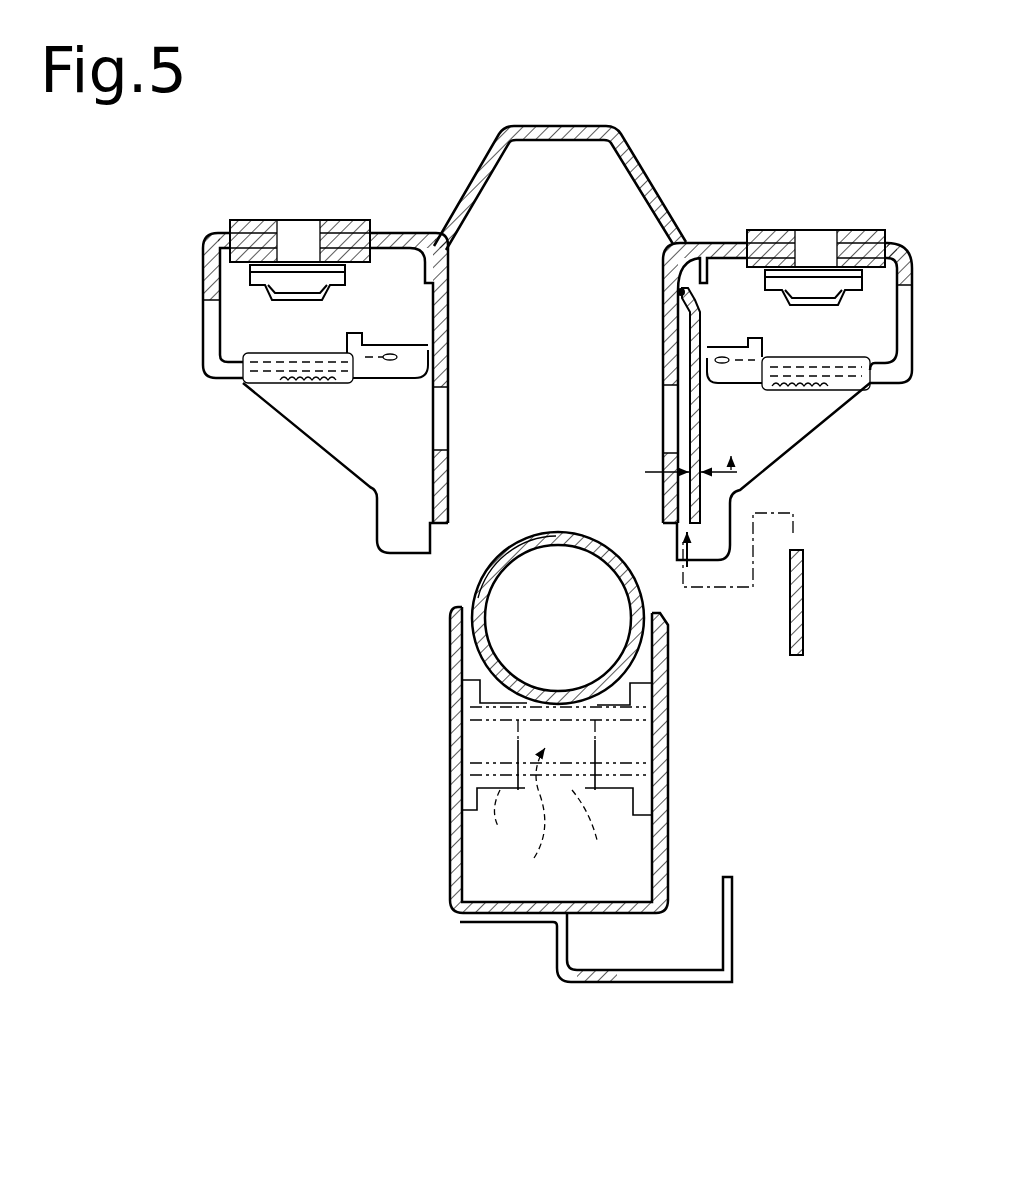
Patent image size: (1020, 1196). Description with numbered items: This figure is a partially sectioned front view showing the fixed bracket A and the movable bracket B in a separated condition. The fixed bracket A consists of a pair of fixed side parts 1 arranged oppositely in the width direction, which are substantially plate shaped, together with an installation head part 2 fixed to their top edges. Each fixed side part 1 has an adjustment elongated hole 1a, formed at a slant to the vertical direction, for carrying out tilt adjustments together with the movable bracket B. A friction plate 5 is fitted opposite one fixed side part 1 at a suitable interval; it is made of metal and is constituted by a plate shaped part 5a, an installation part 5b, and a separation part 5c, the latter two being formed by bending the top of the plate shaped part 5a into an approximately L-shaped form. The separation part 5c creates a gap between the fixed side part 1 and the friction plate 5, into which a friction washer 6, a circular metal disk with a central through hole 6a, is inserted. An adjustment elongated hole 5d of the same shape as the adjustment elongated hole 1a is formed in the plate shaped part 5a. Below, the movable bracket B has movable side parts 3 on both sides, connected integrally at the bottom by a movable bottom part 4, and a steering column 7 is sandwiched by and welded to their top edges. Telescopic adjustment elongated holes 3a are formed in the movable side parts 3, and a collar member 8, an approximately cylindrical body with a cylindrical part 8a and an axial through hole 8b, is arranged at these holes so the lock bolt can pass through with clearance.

The fixed side part 1 is at (455, 357).
The adjustment elongated hole 1a is at (445, 433).
The installation head part 2 is at (565, 134).
The movable side part 3 is at (556, 760).
The telescopic adjustment elongated hole 3a is at (456, 752).
The movable bottom part 4 is at (612, 917).
The friction plate 5 is at (740, 432).
The plate shaped part 5a is at (745, 380).
The installation part 5b is at (690, 302).
The separation part 5c is at (702, 320).
The adjustment elongated hole 5d is at (700, 424).
The friction washer 6 is at (829, 601).
The through hole 6a is at (804, 598).
The steering column 7 is at (577, 534).
The collar member 8 is at (506, 818).
The cylindrical part 8a is at (596, 829).
The axial through hole 8b is at (520, 817).
The fixed bracket A is at (668, 182).
The movable bracket B is at (672, 712).